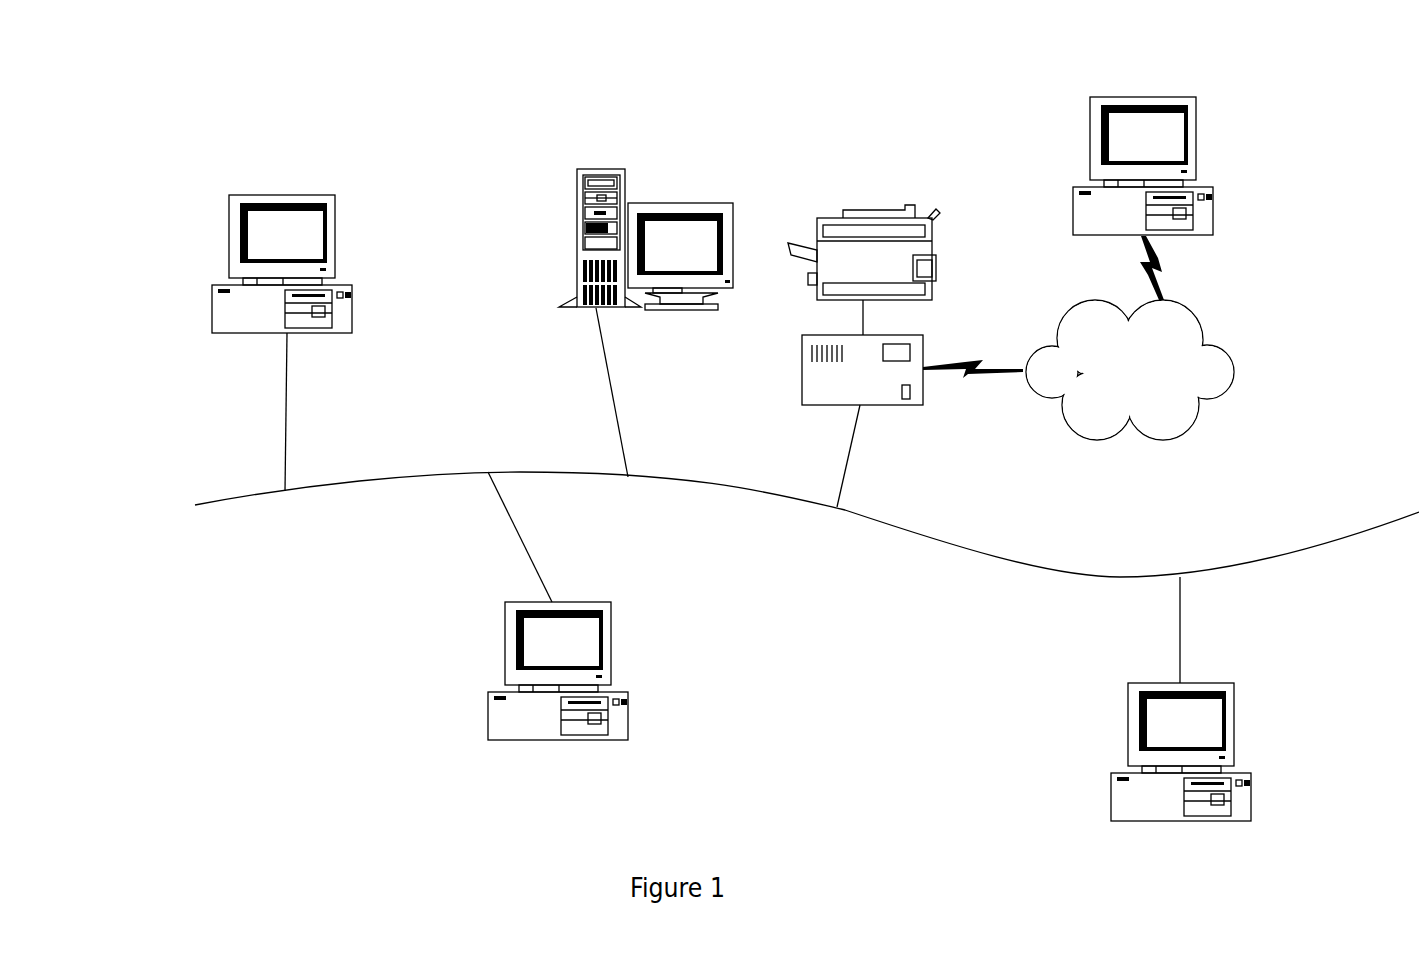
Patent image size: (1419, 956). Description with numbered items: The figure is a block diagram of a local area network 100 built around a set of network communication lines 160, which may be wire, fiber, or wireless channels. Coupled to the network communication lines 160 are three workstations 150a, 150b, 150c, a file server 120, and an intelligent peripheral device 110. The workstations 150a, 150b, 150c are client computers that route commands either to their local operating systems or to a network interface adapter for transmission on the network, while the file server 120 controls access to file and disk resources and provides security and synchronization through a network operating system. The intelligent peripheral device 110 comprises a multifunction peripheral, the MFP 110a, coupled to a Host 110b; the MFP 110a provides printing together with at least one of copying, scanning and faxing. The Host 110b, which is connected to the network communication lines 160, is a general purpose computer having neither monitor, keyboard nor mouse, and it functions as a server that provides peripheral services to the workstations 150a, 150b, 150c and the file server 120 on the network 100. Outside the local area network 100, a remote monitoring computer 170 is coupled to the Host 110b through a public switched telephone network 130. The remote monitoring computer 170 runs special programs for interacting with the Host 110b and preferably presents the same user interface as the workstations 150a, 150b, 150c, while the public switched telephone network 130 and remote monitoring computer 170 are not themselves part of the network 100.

The local area network 100 is at (798, 38).
The intelligent peripheral device 110 is at (916, 316).
The MFP 110a is at (863, 205).
The Host 110b is at (922, 405).
The file server 120 is at (597, 169).
The public switched telephone network 130 is at (1098, 440).
The workstation 150a is at (285, 195).
The workstation 150b is at (558, 742).
The workstation 150c is at (1180, 822).
The network communication lines 160 is at (455, 472).
The remote monitoring computer 170 is at (1143, 97).